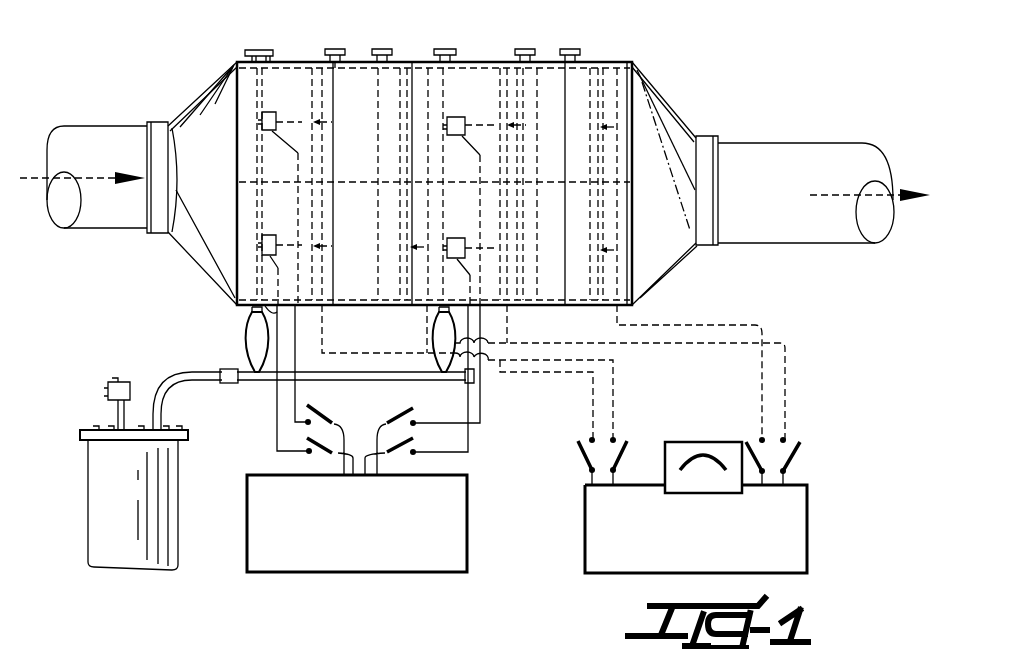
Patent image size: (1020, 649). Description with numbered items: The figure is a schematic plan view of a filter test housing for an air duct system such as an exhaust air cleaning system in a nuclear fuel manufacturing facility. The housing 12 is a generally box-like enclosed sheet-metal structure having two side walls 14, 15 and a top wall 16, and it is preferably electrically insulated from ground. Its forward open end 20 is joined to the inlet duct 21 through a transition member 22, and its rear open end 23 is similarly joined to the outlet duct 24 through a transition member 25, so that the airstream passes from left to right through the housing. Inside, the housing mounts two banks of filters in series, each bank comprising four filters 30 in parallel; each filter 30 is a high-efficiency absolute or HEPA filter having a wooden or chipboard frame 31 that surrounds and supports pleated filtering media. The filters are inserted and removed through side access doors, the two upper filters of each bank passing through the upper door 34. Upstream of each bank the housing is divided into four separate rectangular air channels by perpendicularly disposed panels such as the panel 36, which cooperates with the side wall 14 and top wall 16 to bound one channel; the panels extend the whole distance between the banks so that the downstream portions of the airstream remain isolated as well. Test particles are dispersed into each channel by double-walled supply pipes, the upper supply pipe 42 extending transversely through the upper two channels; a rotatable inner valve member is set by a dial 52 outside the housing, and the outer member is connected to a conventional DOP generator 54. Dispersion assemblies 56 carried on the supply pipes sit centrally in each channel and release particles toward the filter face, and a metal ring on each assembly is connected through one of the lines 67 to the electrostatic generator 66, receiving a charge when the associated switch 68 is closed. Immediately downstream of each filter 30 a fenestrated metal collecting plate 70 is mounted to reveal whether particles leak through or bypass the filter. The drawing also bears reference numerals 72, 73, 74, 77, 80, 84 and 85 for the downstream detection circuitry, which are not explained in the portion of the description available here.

The housing 12 is at (198, 58).
The side wall 14 is at (282, 54).
The side wall 15 is at (247, 328).
The top wall 16 is at (281, 203).
The forward open end 20 is at (153, 138).
The inlet duct 21 is at (90, 137).
The transition member 22 is at (205, 111).
The rear open end 23 is at (703, 146).
The outlet duct 24 is at (800, 161).
The transition member 25 is at (660, 266).
The filter 30 is at (355, 100).
The frame 31 is at (334, 641).
The upper side access door 34 is at (343, 57).
The panel 36 is at (318, 173).
The upper supply pipe 42 is at (458, 100).
The dial 52 is at (255, 60).
The DOP generator 54 is at (135, 535).
The dispersion assembly 56 is at (249, 135).
The electrostatic generator 66 is at (300, 573).
The line 67 is at (277, 398).
The switch 68 is at (385, 420).
The collecting plate 70 is at (414, 105).
The testing equipment 72 is at (808, 528).
The conductor 73 is at (783, 388).
The meter 74 is at (758, 438).
The lead 77 is at (676, 441).
The electrode 80 is at (327, 213).
The conductor 84 is at (592, 395).
The switch 85 is at (585, 462).